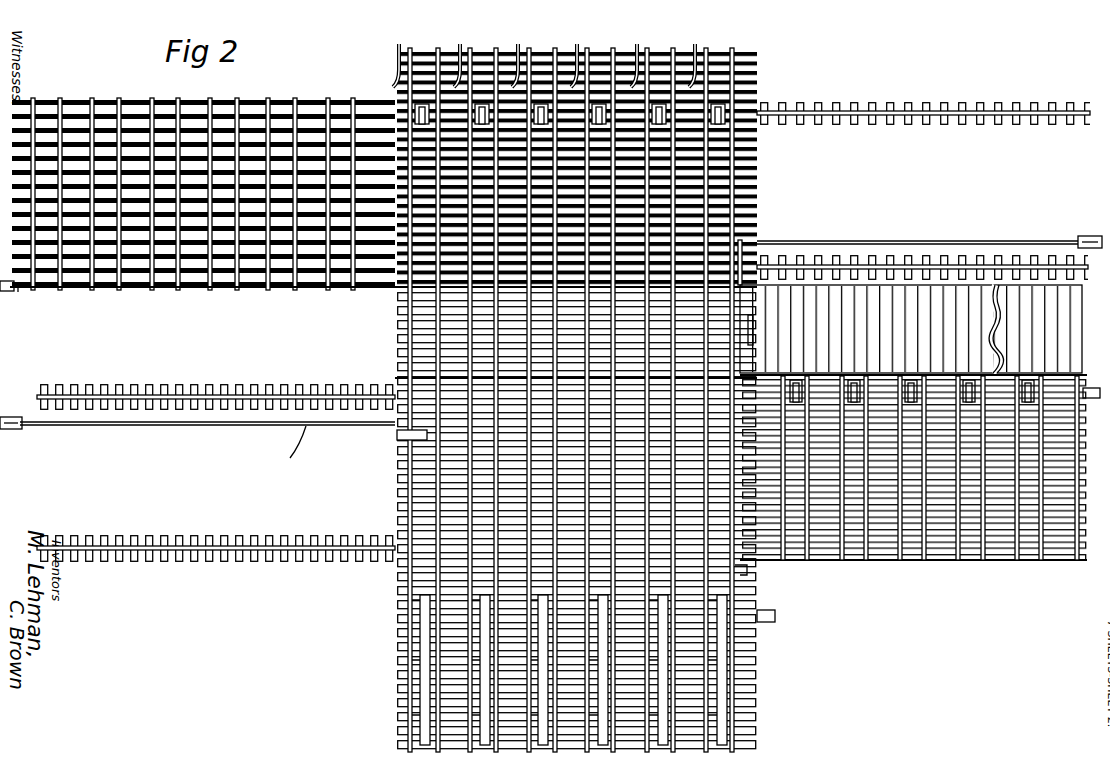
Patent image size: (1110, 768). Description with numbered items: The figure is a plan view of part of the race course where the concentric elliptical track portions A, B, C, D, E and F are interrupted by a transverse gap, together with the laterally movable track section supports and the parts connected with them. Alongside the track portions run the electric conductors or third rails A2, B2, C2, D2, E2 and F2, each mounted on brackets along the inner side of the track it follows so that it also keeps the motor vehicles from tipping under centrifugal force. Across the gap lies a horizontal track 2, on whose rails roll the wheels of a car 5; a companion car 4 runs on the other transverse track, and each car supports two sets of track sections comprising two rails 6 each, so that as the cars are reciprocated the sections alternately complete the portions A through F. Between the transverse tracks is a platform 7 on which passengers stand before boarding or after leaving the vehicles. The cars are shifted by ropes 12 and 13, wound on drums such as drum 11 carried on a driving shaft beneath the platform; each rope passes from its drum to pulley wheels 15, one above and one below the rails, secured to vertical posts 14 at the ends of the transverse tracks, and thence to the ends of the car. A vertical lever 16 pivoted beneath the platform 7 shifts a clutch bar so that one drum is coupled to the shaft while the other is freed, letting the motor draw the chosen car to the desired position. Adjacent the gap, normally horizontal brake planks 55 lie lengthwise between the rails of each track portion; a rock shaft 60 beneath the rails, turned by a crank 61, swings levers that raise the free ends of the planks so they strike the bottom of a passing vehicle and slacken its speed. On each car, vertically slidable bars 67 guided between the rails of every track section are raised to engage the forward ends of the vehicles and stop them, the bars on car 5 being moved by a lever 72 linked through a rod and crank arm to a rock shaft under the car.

The horizontal track 2 is at (898, 126).
The car 4 is at (396, 436).
The car 5 is at (260, 98).
The track section rails 6 is at (93, 98).
The platform 7 is at (898, 325).
The drum 11 is at (318, 394).
The rope 12 is at (288, 450).
The rope 13 is at (18, 292).
The vertical post 14 is at (1097, 236).
The pulley wheel 15 is at (1082, 240).
The vertical lever 16 is at (753, 328).
The brake plank 55 is at (423, 610).
The rock shaft 60 is at (768, 611).
The crank 61 is at (776, 617).
The vertically slidable bar 67 is at (740, 108).
The lever 72 is at (752, 252).
The track portion A is at (436, 50).
The electric conductor A2 is at (397, 58).
The track portion B is at (494, 50).
The electric conductor B2 is at (459, 50).
The track portion C is at (553, 50).
The electric conductor C2 is at (517, 50).
The track portion D is at (611, 50).
The electric conductor D2 is at (577, 50).
The track portion E is at (671, 50).
The electric conductor E2 is at (637, 50).
The track portion F is at (732, 50).
The electric conductor F2 is at (695, 50).